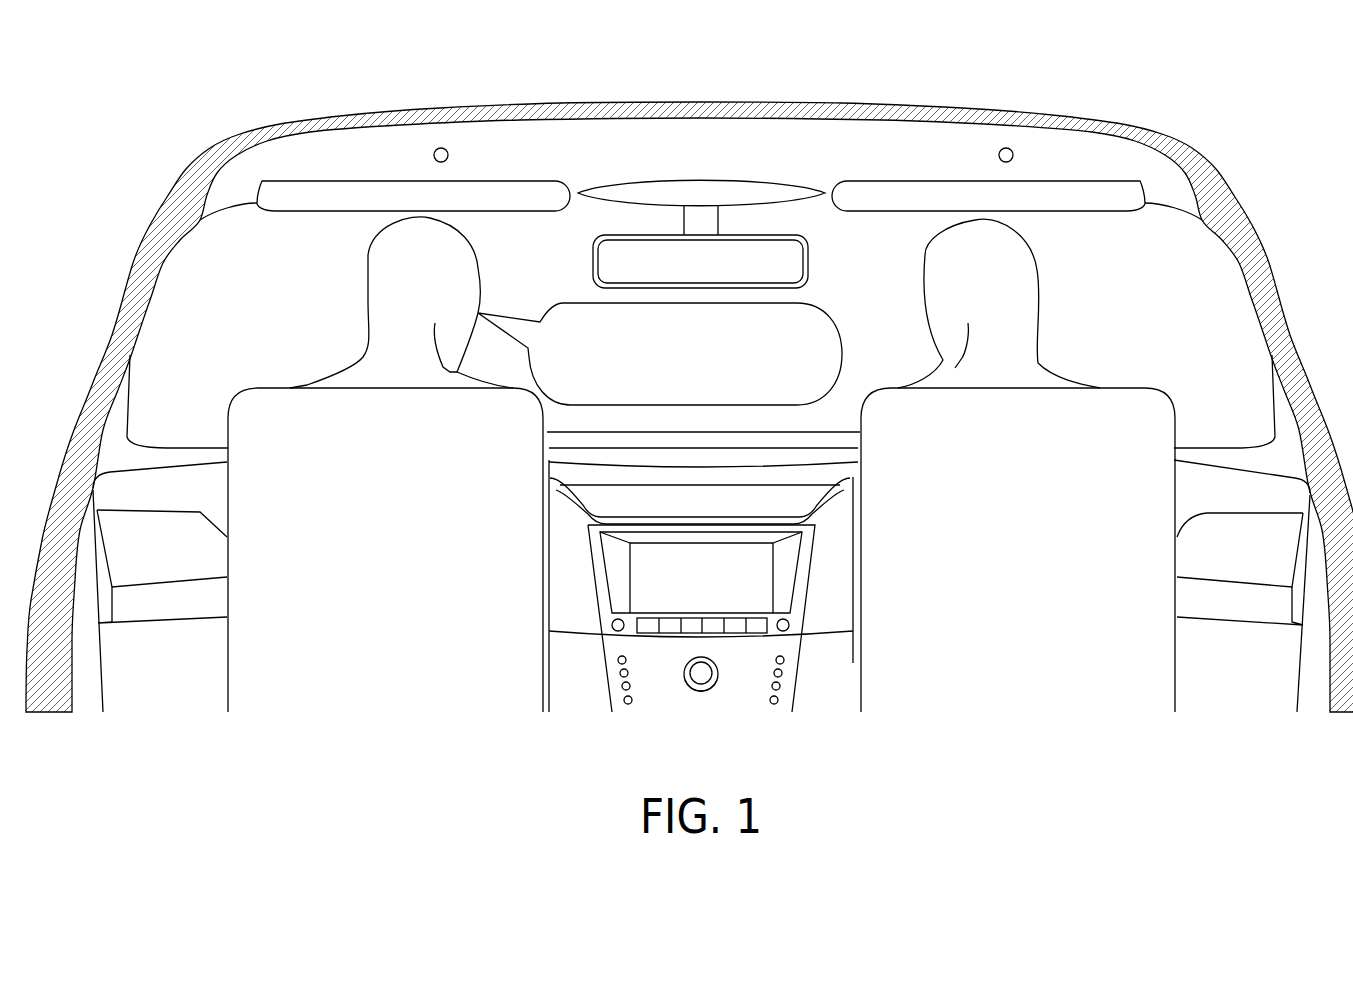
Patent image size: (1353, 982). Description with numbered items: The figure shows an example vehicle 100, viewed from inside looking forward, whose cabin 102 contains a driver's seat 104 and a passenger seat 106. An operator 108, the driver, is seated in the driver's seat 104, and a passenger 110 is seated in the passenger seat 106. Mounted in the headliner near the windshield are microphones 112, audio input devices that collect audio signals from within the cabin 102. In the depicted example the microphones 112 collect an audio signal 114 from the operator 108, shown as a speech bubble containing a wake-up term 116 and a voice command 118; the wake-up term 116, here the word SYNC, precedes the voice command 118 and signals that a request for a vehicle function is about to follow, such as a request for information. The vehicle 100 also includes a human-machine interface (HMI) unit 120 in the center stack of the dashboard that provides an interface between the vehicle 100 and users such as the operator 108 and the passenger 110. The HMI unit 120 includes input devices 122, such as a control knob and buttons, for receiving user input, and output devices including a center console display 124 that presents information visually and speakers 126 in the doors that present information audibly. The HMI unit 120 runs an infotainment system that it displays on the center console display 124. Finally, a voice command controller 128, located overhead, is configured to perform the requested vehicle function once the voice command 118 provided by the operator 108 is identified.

The vehicle 100 is at (1165, 134).
The cabin 102 is at (112, 447).
The driver's seat 104 is at (366, 582).
The passenger seat 106 is at (1007, 582).
The operator 108 is at (368, 262).
The passenger 110 is at (1038, 290).
The microphones 112 is at (441, 148).
The audio signal 114 is at (813, 310).
The wake-up term 116 is at (580, 315).
The voice command 118 is at (832, 363).
The human-machine interface (HMI) unit 120 is at (576, 617).
The input devices 122 is at (780, 703).
The center console display 124 is at (684, 590).
The speakers 126 is at (148, 684).
The voice command controller 128 is at (683, 158).